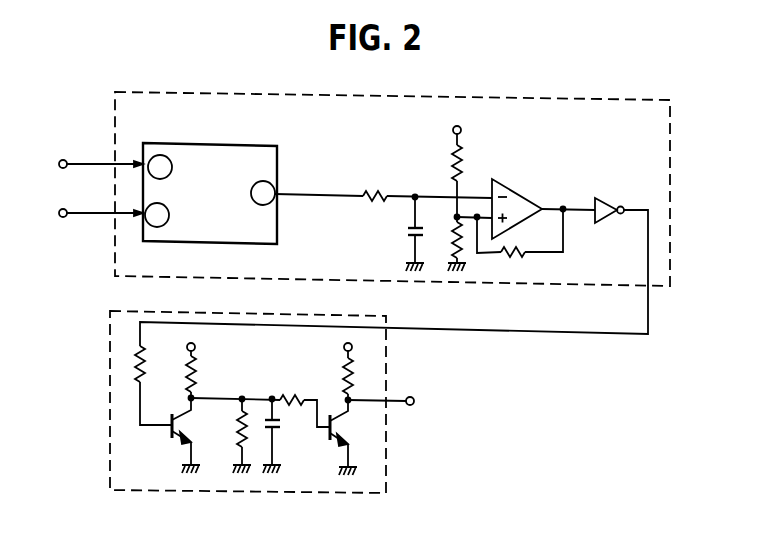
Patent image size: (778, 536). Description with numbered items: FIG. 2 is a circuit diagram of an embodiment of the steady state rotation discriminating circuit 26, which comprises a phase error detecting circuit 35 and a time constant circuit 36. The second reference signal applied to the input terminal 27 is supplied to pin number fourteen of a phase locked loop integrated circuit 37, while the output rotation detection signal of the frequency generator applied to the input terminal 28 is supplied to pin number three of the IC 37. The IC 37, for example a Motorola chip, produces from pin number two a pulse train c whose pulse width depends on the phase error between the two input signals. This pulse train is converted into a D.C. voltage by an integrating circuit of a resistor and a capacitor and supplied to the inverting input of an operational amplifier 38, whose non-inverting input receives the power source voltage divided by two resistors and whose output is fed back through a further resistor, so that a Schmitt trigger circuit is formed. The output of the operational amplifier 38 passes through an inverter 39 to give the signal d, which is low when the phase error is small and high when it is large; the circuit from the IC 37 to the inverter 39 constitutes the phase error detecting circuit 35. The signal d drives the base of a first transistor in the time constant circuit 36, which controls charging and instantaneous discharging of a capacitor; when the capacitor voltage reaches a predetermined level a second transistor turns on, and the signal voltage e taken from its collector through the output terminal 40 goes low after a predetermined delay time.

The steady state rotation discriminating circuit 26 is at (363, 194).
The input terminal 27 is at (64, 158).
The input terminal 28 is at (64, 218).
The phase error detecting circuit 35 is at (424, 96).
The time constant circuit 36 is at (110, 400).
The phase locked loop integrated circuit 37 is at (206, 150).
The operational amplifier 38 is at (512, 190).
The inverter 39 is at (616, 199).
The output terminal 40 is at (410, 397).